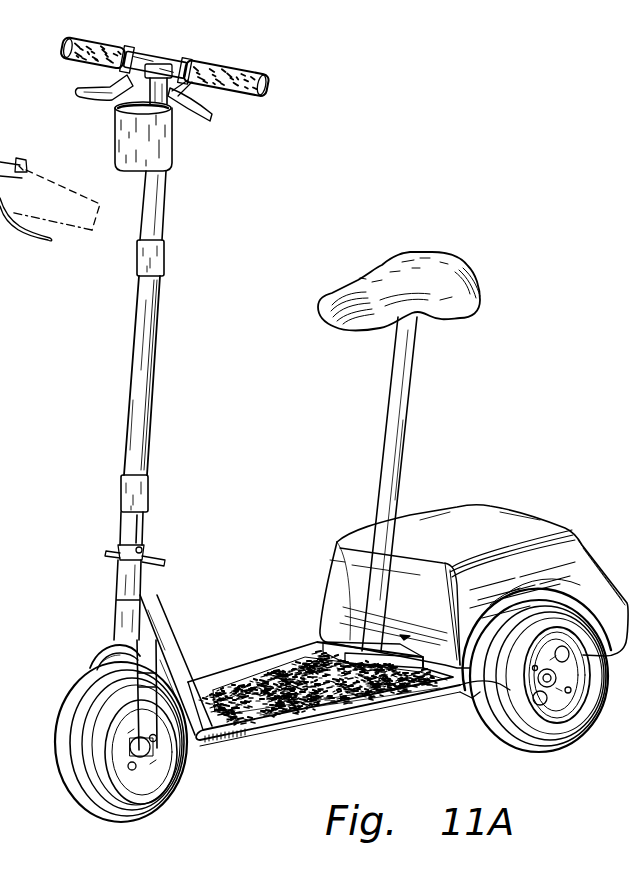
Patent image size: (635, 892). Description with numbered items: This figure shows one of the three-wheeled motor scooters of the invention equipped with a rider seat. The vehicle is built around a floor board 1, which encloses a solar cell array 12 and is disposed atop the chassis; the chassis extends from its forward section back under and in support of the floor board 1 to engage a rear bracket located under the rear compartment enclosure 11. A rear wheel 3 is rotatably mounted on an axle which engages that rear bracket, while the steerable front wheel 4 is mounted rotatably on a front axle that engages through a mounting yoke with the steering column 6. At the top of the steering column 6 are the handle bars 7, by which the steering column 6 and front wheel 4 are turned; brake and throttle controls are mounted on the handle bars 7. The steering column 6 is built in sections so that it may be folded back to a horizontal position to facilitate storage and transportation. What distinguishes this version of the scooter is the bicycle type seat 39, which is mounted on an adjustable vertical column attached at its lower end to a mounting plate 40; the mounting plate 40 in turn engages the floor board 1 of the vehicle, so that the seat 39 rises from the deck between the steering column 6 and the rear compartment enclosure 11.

The floor board 1 is at (240, 668).
The rear wheel 3 is at (543, 733).
The front wheel 4 is at (63, 722).
The steering column 6 is at (162, 382).
The handle bars 7 is at (156, 62).
The rear compartment enclosure 11 is at (455, 525).
The solar cell array 12 is at (333, 702).
The bicycle type seat 39 is at (378, 276).
The mounting plate 40 is at (340, 645).